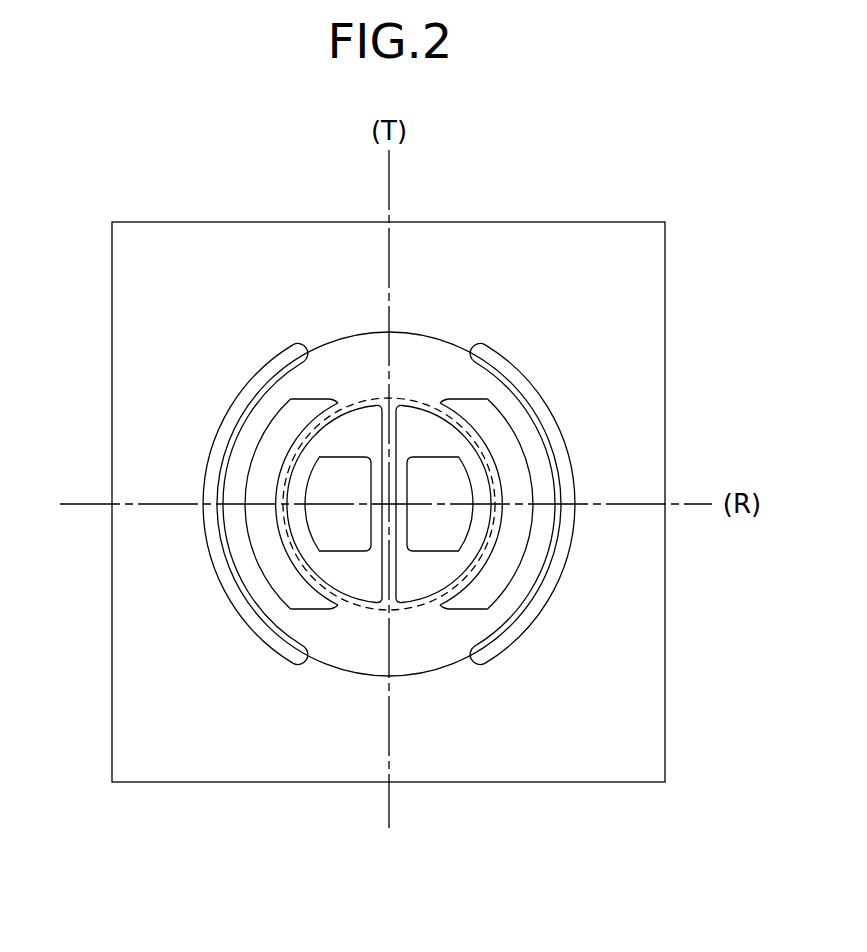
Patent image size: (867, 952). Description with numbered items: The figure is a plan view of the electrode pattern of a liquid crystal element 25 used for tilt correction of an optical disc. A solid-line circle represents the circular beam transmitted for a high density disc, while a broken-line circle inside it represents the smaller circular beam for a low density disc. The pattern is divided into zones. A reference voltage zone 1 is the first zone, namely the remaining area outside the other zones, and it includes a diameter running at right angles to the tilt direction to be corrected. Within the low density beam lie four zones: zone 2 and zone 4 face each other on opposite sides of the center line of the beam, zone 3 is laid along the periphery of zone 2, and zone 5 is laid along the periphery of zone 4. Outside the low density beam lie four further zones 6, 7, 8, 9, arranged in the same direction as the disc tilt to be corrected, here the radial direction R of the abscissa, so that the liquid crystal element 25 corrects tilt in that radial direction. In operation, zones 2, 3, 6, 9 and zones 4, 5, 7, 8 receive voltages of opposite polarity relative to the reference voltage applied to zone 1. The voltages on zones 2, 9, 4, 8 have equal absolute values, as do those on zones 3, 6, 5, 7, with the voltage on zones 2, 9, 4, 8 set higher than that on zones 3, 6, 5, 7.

The reference voltage zone 1 is at (117, 293).
The zone 2 is at (350, 463).
The zone 3 is at (327, 437).
The zone 4 is at (425, 463).
The zone 5 is at (450, 437).
The zone 6 is at (288, 408).
The zone 7 is at (490, 408).
The zone 8 is at (236, 412).
The zone 9 is at (542, 412).
The liquid crystal element 25 is at (678, 212).